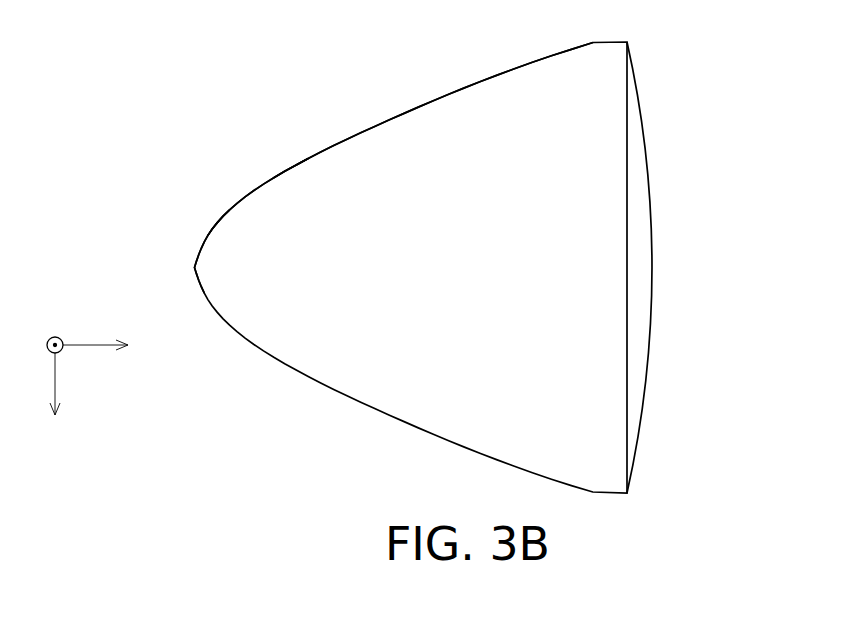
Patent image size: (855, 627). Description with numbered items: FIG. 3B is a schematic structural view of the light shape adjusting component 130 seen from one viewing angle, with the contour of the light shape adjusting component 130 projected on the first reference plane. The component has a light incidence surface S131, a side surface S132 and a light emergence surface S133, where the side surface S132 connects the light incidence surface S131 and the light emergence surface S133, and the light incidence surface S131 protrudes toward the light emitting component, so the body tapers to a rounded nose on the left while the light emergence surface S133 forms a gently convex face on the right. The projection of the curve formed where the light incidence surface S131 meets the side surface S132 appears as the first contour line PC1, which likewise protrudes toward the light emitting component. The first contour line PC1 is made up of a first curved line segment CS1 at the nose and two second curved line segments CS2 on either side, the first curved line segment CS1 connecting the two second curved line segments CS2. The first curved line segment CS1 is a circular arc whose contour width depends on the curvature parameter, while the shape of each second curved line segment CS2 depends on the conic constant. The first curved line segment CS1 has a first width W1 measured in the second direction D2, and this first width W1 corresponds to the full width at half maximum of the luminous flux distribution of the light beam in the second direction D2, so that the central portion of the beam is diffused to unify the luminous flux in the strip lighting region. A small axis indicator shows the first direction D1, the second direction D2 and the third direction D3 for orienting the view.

The light shape adjusting component 130 is at (800, 505).
The light incidence surface S131 is at (187, 258).
The side surface S132 is at (447, 165).
The light emergence surface S133 is at (662, 318).
The first contour line PC1 is at (273, 83).
The first curved line segment CS1 is at (213, 225).
The second curved line segment CS2 is at (297, 163).
The first width W1 is at (263, 186).
The first direction D1 is at (44, 330).
The second direction D2 is at (56, 403).
The third direction D3 is at (111, 346).